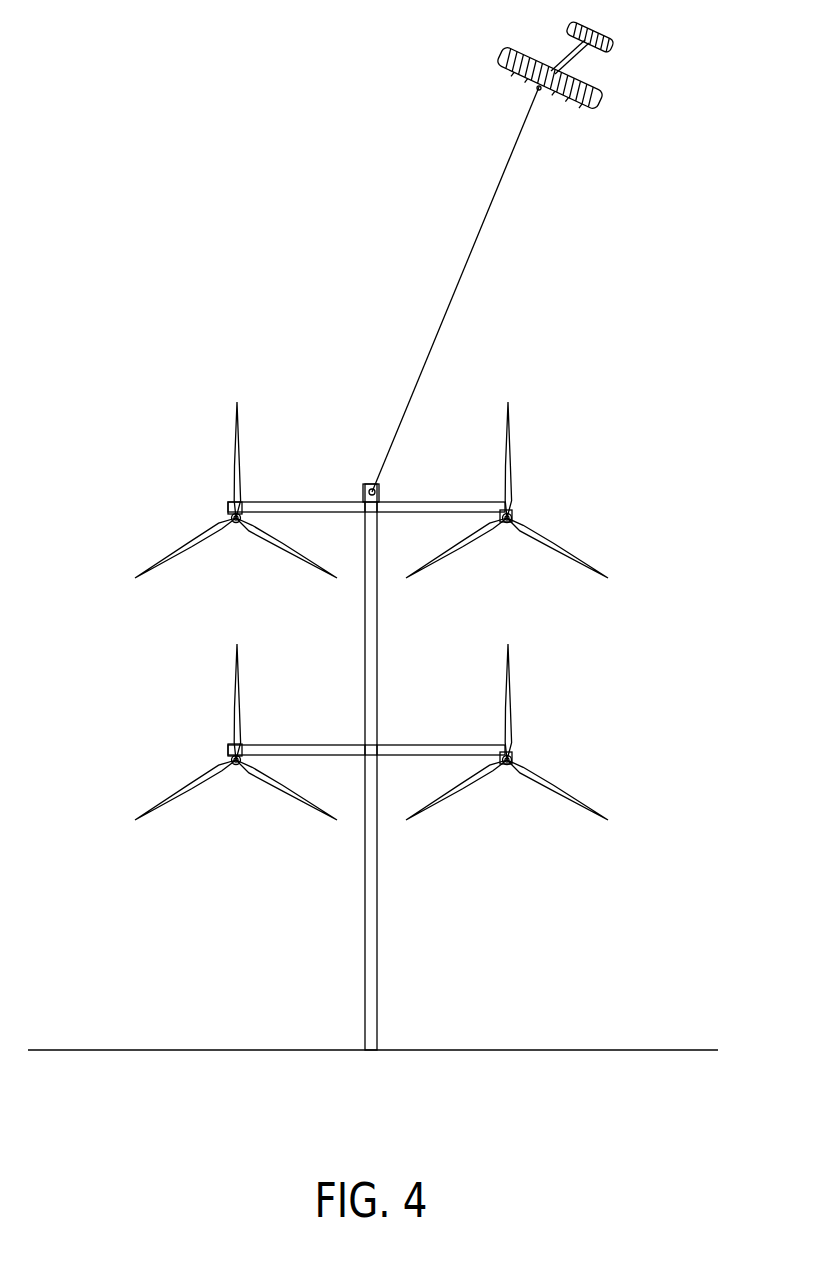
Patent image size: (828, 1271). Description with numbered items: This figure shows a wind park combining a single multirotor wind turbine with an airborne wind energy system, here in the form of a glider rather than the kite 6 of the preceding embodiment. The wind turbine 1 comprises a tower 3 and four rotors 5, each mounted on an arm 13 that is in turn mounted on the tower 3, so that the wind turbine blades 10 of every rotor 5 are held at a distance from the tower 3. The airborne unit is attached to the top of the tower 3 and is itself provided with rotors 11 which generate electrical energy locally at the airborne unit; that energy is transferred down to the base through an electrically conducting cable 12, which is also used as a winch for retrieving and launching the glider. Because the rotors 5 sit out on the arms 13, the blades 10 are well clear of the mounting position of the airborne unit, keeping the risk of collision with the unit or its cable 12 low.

The wind turbine 1 is at (602, 385).
The tower 3 is at (372, 913).
The rotor 5 is at (371, 611).
The kite 6 is at (581, 92).
The wind turbine blade 10 is at (263, 542).
The rotor 11 is at (527, 86).
The electrically conducting cable 12 is at (462, 282).
The arm 13 is at (303, 510).